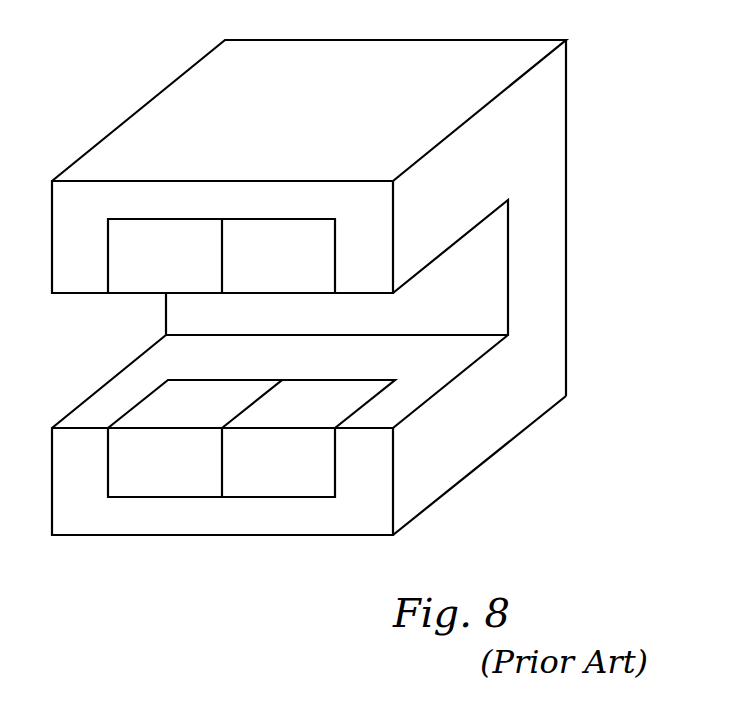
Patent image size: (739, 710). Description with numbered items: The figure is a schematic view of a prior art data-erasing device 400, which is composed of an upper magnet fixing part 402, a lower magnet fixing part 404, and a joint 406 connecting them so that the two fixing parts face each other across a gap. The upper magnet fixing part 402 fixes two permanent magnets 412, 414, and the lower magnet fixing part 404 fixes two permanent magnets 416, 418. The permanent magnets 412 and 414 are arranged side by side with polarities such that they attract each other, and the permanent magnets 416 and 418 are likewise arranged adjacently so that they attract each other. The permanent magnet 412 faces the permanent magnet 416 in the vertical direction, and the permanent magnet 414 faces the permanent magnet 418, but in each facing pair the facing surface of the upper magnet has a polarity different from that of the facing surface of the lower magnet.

The data-erasing device 400 is at (112, 80).
The upper magnet fixing part 402 is at (371, 50).
The lower magnet fixing part 404 is at (210, 523).
The joint 406 is at (548, 150).
The permanent magnet 412 is at (140, 277).
The permanent magnet 414 is at (306, 277).
The permanent magnet 416 is at (143, 491).
The permanent magnet 418 is at (306, 486).